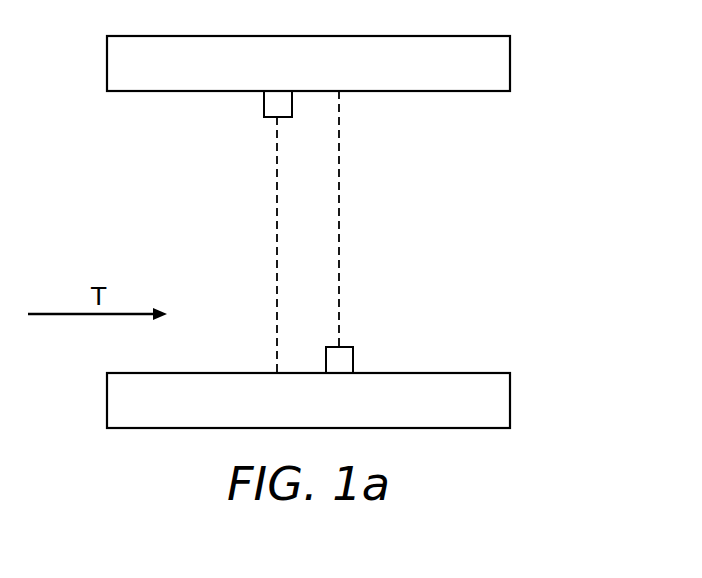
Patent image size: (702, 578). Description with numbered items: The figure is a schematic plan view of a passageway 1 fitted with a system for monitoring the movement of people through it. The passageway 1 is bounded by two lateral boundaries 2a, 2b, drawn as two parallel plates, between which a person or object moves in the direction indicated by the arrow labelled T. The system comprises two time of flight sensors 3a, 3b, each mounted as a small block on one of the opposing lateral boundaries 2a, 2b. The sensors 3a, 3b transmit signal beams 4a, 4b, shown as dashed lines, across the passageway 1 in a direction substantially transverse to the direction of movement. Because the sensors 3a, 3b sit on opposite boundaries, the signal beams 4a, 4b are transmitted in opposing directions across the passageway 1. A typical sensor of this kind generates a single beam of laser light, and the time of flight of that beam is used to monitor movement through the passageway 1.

The passageway 1 is at (513, 166).
The lateral boundary 2a is at (510, 52).
The lateral boundary 2b is at (511, 390).
The time of flight sensor 3a is at (264, 108).
The time of flight sensor 3b is at (353, 352).
The signal beam 4a is at (277, 245).
The signal beam 4b is at (339, 222).